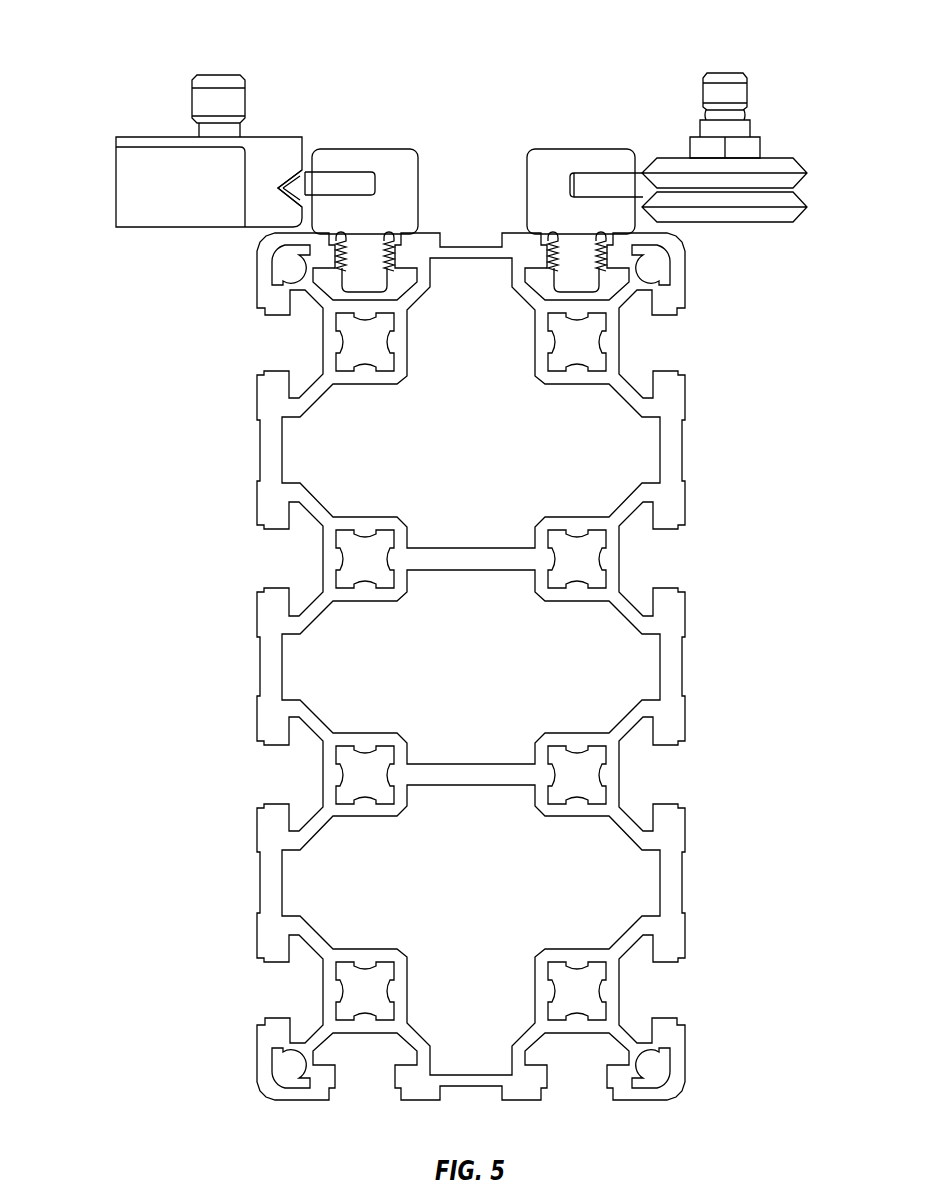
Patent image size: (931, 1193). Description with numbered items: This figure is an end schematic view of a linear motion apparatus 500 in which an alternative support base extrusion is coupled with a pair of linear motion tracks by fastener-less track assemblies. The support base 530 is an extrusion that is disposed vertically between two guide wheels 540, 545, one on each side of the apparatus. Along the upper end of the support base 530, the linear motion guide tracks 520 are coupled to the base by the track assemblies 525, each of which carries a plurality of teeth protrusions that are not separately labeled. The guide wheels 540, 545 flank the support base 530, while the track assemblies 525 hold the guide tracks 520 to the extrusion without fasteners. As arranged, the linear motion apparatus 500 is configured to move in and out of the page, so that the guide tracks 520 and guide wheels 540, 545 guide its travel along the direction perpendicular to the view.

The linear motion apparatus 500 is at (126, 50).
The linear motion guide track 520 is at (309, 162).
The track assembly 525 is at (397, 160).
The support base 530 is at (683, 667).
The guide wheel 540 is at (116, 178).
The guide wheel 545 is at (793, 188).